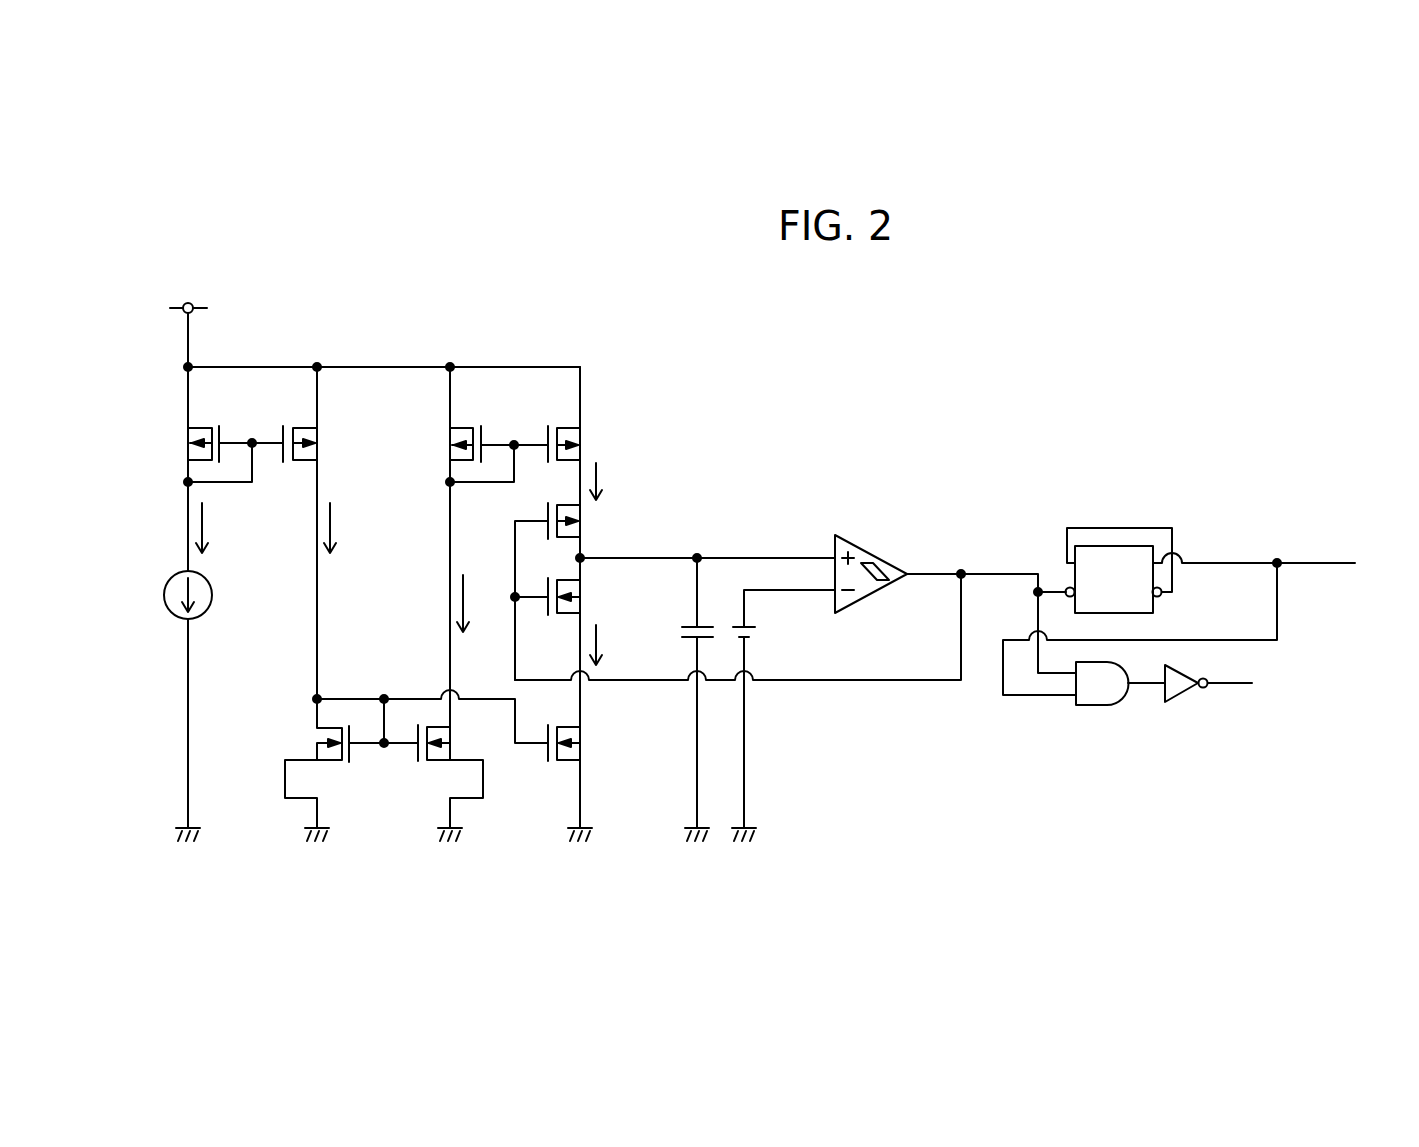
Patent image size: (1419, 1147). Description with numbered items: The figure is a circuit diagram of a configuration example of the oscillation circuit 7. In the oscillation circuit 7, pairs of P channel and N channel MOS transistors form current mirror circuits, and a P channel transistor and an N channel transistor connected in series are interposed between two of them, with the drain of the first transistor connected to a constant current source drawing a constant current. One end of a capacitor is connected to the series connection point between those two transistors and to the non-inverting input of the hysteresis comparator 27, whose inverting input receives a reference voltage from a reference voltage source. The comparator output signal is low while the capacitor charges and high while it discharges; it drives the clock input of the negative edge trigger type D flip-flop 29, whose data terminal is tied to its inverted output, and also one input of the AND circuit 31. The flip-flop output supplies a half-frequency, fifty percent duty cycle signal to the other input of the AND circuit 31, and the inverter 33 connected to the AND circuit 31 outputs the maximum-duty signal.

The oscillation circuit 7 is at (760, 462).
The hysteresis comparator 27 is at (867, 548).
The negative edge trigger type D flip-flop 29 is at (1110, 546).
The AND circuit 31 is at (1083, 706).
The inverter 33 is at (1178, 702).